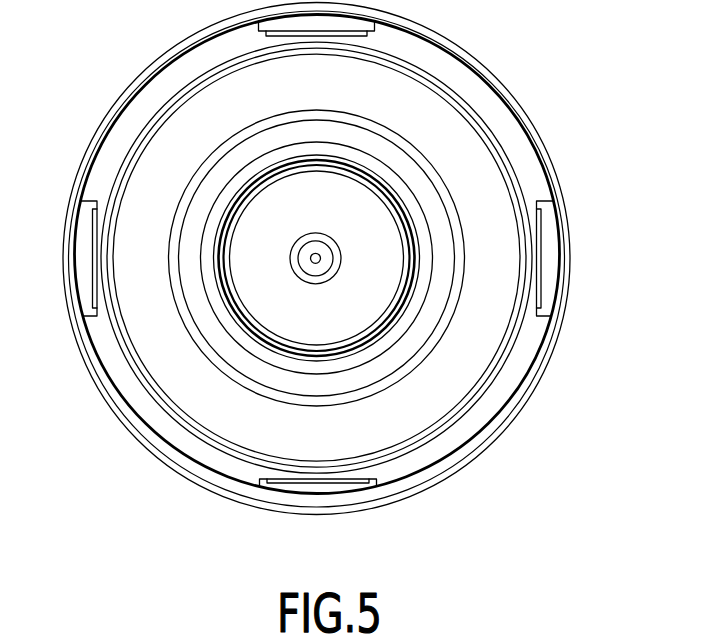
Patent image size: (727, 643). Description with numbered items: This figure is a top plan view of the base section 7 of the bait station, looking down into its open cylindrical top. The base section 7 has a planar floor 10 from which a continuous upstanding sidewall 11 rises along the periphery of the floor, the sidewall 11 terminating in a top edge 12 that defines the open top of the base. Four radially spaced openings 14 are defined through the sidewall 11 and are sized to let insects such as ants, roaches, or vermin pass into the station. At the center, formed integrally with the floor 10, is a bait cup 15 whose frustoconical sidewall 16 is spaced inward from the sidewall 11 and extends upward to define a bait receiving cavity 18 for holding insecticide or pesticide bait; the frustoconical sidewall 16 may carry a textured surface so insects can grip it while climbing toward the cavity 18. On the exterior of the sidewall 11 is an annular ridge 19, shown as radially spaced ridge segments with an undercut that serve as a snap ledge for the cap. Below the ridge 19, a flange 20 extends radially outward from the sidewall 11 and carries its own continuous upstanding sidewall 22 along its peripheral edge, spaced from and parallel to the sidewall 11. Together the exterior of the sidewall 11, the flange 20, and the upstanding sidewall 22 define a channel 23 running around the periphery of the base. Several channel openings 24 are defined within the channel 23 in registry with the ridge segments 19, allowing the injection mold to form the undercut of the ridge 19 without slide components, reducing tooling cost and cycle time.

The base section 7 is at (178, 512).
The floor 10 is at (154, 237).
The sidewall 11 is at (141, 137).
The top edge 12 is at (370, 57).
The openings 14 is at (236, 66).
The bait cup 15 is at (415, 178).
The frustoconical sidewall 16 is at (440, 232).
The bait receiving cavity 18 is at (339, 328).
The annular ridge 19 is at (540, 233).
The flange 20 is at (527, 368).
The upstanding sidewall 22 is at (532, 399).
The channel 23 is at (519, 152).
The channel openings 24 is at (552, 268).